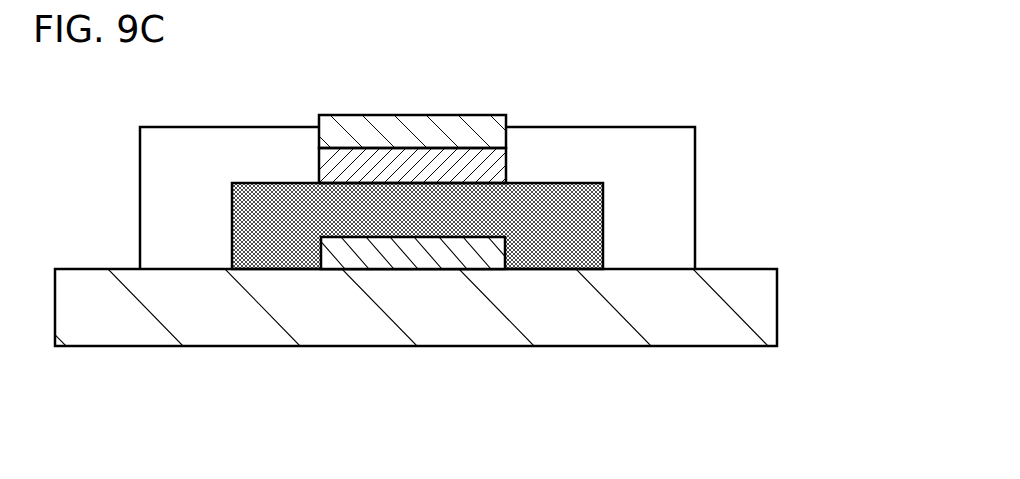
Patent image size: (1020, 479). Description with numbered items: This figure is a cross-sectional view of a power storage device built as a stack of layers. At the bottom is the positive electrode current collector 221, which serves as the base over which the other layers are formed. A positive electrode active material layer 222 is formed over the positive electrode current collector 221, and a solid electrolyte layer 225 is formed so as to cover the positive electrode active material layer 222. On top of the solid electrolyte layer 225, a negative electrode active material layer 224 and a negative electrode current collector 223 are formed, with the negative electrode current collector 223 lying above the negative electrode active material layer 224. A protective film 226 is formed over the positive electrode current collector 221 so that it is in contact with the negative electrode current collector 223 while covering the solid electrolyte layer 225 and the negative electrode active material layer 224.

The positive electrode current collector 221 is at (748, 340).
The positive electrode active material layer 222 is at (420, 257).
The negative electrode current collector 223 is at (353, 125).
The negative electrode active material layer 224 is at (475, 157).
The solid electrolyte layer 225 is at (557, 247).
The protective film 226 is at (205, 140).